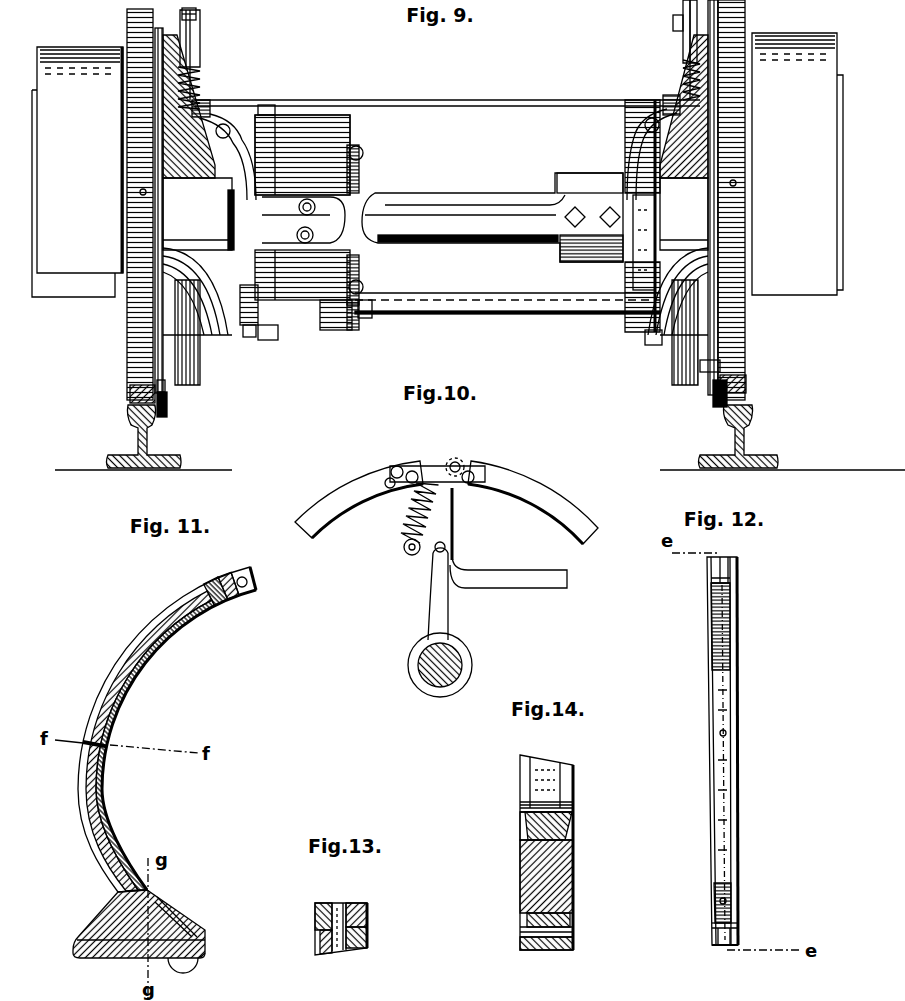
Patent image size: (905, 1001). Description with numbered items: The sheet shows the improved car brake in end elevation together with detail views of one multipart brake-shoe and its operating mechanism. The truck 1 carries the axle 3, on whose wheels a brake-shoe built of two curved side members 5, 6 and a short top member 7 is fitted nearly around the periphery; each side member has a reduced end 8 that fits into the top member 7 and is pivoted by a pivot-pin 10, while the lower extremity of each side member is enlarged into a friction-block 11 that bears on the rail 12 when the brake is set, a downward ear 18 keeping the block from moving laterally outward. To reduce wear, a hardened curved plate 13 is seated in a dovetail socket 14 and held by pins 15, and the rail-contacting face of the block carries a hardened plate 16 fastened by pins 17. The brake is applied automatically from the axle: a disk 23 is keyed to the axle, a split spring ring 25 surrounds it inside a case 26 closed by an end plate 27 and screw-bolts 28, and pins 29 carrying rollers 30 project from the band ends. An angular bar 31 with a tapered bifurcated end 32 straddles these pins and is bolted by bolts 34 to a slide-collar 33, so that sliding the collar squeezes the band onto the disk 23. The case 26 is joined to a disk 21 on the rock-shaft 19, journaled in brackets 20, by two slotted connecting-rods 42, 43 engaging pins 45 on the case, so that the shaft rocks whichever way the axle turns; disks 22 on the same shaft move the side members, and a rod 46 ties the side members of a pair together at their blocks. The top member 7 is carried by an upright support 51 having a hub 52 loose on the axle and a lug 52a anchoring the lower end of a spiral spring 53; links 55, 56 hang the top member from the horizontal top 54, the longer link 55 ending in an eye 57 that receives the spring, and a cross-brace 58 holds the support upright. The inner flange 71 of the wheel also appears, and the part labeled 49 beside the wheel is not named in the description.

In FIG. 9, the truck 1 is at (76, 255).
In FIG. 9, the axle 3 is at (504, 198).
In FIG. 10, the axle 3 is at (456, 658).
In FIG. 9, the curved side member 5 is at (127, 24).
In FIG. 10, the curved side member 5 is at (355, 500).
In FIG. 11, the curved side member 5 is at (135, 638).
In FIG. 12, the curved side member 5 is at (738, 598).
In FIG. 13, the curved side member 5 is at (367, 903).
In FIG. 14, the curved side member 5 is at (575, 778).
In FIG. 10, the curved side member 6 is at (553, 498).
In FIG. 10, the top member 7 is at (440, 463).
In FIG. 11, the reduced end 8 is at (257, 590).
In FIG. 12, the reduced end 8 is at (738, 566).
In FIG. 10, the pivot-pin 10 is at (390, 489).
In FIG. 9, the friction-block 11 is at (140, 387).
In FIG. 11, the friction-block 11 is at (147, 893).
In FIG. 12, the friction-block 11 is at (738, 930).
In FIG. 14, the friction-block 11 is at (547, 883).
In FIG. 9, the rail 12 is at (150, 440).
In FIG. 11, the hardened curved plate 13 is at (110, 802).
In FIG. 13, the hardened curved plate 13 is at (367, 927).
In FIG. 14, the hardened curved plate 13 is at (520, 823).
In FIG. 11, the dovetail socket 14 is at (118, 838).
In FIG. 12, the dovetail socket 14 is at (712, 925).
In FIG. 13, the dovetail socket 14 is at (322, 938).
In FIG. 14, the dovetail socket 14 is at (567, 828).
In FIG. 9, the pin 15 is at (140, 192).
In FIG. 11, the pin 15 is at (213, 603).
In FIG. 12, the pin 15 is at (718, 670).
In FIG. 13, the pin 15 is at (337, 910).
In FIG. 11, the hardened plate 16 is at (200, 967).
In FIG. 12, the hardened plate 16 is at (720, 945).
In FIG. 14, the hardened plate 16 is at (538, 950).
In FIG. 11, the pin 17 is at (207, 933).
In FIG. 14, the pin 17 is at (522, 932).
In FIG. 9, the ear 18 is at (168, 410).
In FIG. 11, the ear 18 is at (180, 967).
In FIG. 9, the rock-shaft 19 is at (470, 300).
In FIG. 9, the bracket 20 is at (250, 325).
In FIG. 9, the disk 21 is at (336, 332).
In FIG. 9, the disk 22 is at (247, 337).
In FIG. 9, the disk 23 is at (322, 217).
In FIG. 9, the split spring ring 25 is at (290, 197).
In FIG. 9, the case 26 is at (327, 140).
In FIG. 9, the end plate 27 is at (286, 207).
In FIG. 9, the screw-bolt 28 is at (265, 228).
In FIG. 9, the pin 29 is at (360, 197).
In FIG. 9, the roller 30 is at (315, 203).
In FIG. 9, the angular bar 31 is at (552, 215).
In FIG. 9, the bifurcated end 32 is at (372, 317).
In FIG. 9, the slide-collar 33 is at (592, 180).
In FIG. 9, the bolt 34 is at (577, 230).
In FIG. 9, the connecting-rod 42 is at (312, 200).
In FIG. 9, the connecting-rod 43 is at (358, 332).
In FIG. 9, the pin 45 is at (357, 163).
In FIG. 9, the rod 46 is at (128, 410).
In FIG. 9, the wheel flange housing 49 is at (196, 328).
In FIG. 9, the upright support 51 is at (201, 55).
In FIG. 10, the upright support 51 is at (440, 597).
In FIG. 9, the hub 52 is at (240, 205).
In FIG. 10, the hub 52 is at (418, 670).
In FIG. 9, the lug 52a is at (205, 105).
In FIG. 10, the lug 52a is at (422, 556).
In FIG. 9, the spiral spring 53 is at (195, 84).
In FIG. 10, the spiral spring 53 is at (430, 515).
In FIG. 9, the horizontal top 54 is at (190, 32).
In FIG. 10, the horizontal top 54 is at (478, 478).
In FIG. 9, the link 55 is at (187, 67).
In FIG. 10, the link 55 is at (405, 466).
In FIG. 10, the link 56 is at (462, 466).
In FIG. 10, the eye 57 is at (462, 460).
In FIG. 9, the cross-brace 58 is at (200, 123).
In FIG. 10, the cross-brace 58 is at (550, 580).
In FIG. 9, the inner flange 71 is at (130, 333).